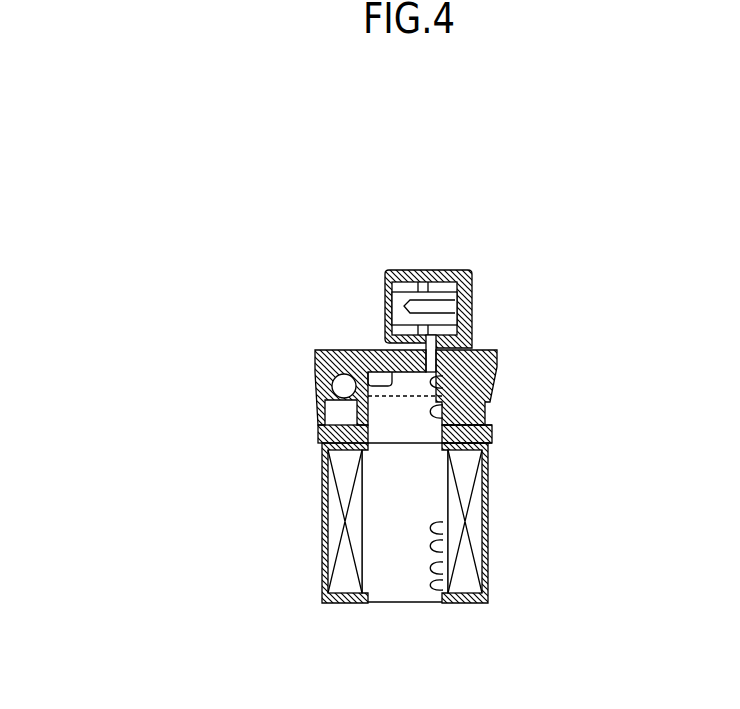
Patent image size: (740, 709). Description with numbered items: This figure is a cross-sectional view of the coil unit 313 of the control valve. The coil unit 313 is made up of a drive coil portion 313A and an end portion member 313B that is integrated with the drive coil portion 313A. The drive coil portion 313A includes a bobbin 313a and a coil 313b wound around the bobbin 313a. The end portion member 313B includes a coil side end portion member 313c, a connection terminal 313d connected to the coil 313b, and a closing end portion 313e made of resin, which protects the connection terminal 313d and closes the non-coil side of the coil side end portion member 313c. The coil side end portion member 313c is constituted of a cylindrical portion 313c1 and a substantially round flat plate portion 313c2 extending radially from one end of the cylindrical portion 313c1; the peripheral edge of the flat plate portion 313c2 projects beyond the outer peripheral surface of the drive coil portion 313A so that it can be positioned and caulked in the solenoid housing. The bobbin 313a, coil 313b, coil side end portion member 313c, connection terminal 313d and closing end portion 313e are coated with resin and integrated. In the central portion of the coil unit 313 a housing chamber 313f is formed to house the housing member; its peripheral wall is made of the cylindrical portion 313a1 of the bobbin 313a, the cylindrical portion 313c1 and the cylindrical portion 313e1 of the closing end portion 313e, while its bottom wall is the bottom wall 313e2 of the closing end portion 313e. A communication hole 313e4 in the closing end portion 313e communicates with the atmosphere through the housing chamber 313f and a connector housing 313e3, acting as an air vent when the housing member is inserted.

The coil unit 313 is at (486, 260).
The drive coil portion 313A is at (212, 568).
The end portion member 313B is at (160, 262).
The bobbin 313a is at (343, 603).
The cylindrical portion of the bobbin 313a1 is at (447, 587).
The coil 313b is at (345, 525).
The coil side end portion member 313c is at (318, 433).
The cylindrical portion 313c1 is at (493, 427).
The flat plate portion 313c2 is at (488, 444).
The connection terminal 313d is at (413, 303).
The closing end portion 313e is at (317, 380).
The cylindrical portion of the closing end portion 313e1 is at (493, 392).
The bottom wall of the closing end portion 313e2 is at (317, 362).
The connector housing 313e3 is at (428, 271).
The communication hole 313e4 is at (440, 350).
The housing chamber 313f is at (435, 543).